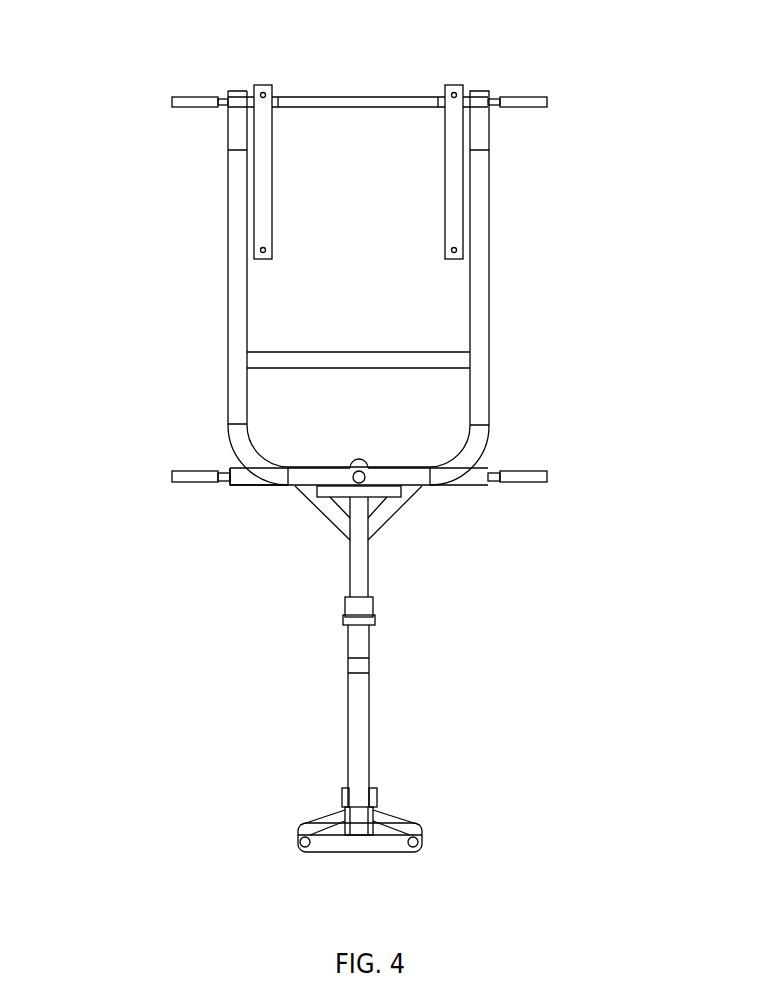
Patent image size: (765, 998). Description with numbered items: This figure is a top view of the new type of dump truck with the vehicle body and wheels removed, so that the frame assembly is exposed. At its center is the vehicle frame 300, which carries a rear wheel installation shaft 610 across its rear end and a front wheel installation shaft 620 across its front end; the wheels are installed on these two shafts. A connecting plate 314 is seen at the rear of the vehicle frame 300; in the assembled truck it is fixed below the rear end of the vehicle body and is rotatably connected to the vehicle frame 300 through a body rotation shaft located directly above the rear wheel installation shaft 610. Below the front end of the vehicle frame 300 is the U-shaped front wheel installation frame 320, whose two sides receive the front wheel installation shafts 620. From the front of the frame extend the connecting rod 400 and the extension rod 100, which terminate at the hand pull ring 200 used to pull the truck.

The rear wheel installation shaft 610 is at (518, 97).
The connecting plate 314 is at (262, 203).
The vehicle frame 300 is at (231, 326).
The front wheel installation shaft 620 is at (174, 470).
The front wheel installation frame 320 is at (244, 487).
The connecting rod 400 is at (352, 560).
The extension rod 100 is at (351, 736).
The hand pull ring 200 is at (399, 839).